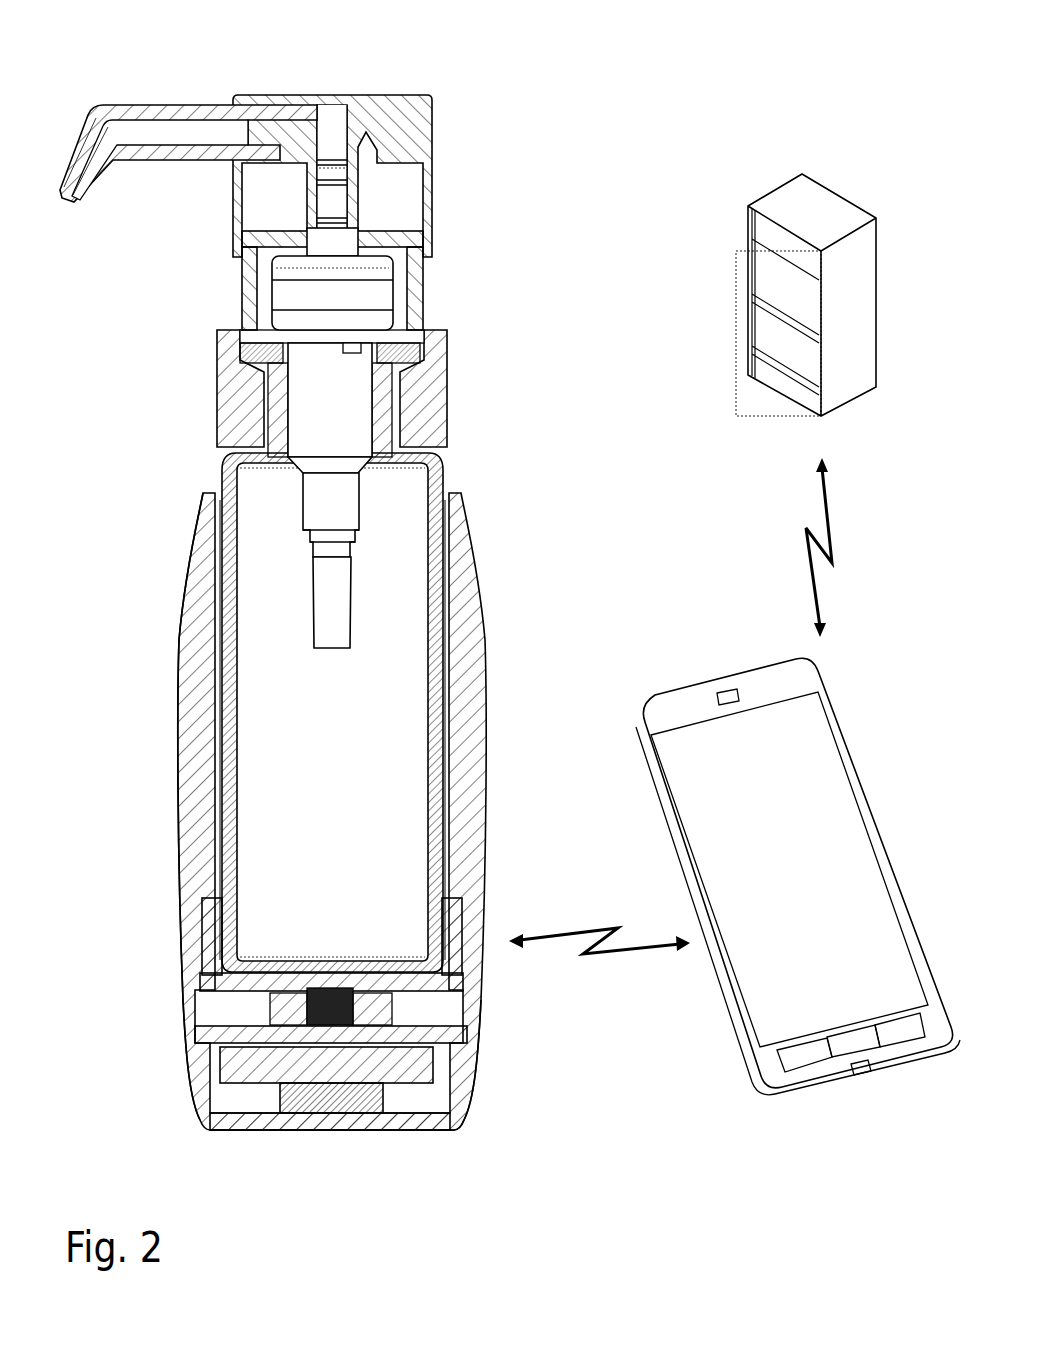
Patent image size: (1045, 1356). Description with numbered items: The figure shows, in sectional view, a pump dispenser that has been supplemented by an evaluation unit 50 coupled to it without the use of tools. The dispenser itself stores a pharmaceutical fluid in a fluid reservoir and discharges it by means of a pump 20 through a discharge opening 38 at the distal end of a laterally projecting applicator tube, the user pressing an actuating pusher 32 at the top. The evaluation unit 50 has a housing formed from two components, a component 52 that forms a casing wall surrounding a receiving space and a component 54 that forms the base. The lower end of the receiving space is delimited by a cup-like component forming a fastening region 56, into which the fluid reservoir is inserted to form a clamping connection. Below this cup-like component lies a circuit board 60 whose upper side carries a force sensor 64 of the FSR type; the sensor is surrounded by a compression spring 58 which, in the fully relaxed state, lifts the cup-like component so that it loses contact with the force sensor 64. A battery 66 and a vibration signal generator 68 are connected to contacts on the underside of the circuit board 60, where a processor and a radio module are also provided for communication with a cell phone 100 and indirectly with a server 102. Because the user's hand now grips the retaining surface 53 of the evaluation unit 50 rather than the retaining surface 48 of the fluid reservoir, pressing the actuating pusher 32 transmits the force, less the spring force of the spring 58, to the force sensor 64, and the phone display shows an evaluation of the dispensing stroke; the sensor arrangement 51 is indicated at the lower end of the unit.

The pump 20 is at (276, 302).
The actuating pusher 32 is at (394, 98).
The discharge opening 38 is at (77, 190).
The retaining surface 48 is at (440, 680).
The evaluation unit 50 is at (325, 616).
The sensor unit 51 is at (347, 1017).
The casing wall component 52 is at (192, 686).
The retaining surface 53 is at (178, 790).
The base component 54 is at (465, 1053).
The fastening region 56 is at (211, 938).
The compression spring 58 is at (272, 1006).
The circuit board 60 is at (262, 1060).
The force sensor 64 is at (290, 1032).
The battery 66 is at (286, 1112).
The vibration signal generator 68 is at (305, 1098).
The cell phone 100 is at (635, 708).
The server 102 is at (748, 260).